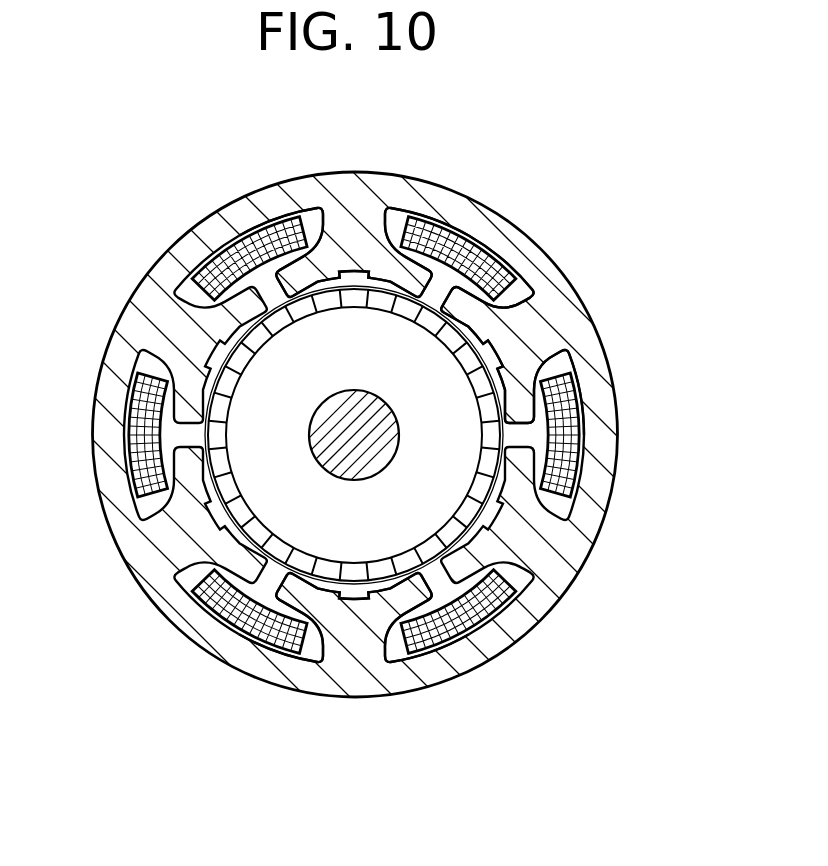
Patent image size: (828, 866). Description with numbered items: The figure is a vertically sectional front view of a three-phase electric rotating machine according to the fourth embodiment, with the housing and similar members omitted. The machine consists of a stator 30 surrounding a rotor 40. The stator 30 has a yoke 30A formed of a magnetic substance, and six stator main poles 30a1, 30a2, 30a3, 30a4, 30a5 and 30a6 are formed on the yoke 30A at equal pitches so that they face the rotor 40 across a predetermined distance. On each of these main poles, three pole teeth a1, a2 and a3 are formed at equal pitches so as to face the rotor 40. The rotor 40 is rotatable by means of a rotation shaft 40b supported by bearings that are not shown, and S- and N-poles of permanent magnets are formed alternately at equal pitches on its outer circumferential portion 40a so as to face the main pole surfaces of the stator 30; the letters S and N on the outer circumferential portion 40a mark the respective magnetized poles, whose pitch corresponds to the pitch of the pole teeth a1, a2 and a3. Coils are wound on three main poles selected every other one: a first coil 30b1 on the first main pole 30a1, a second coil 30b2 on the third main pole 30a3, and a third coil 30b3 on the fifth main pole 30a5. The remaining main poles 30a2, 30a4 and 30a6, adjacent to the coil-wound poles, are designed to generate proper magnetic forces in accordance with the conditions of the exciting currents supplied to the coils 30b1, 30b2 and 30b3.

The stator 30 is at (575, 283).
The yoke 30A is at (537, 272).
The first main pole 30a1 is at (513, 330).
The main pole 30a2 is at (557, 555).
The third main pole 30a3 is at (347, 630).
The main pole 30a4 is at (205, 540).
The fifth main pole 30a5 is at (190, 338).
The main pole 30a6 is at (353, 250).
The first coil 30b1 is at (583, 437).
The second coil 30b2 is at (262, 605).
The third coil 30b3 is at (232, 240).
The pole tooth a1 is at (297, 283).
The pole tooth a2 is at (340, 277).
The pole tooth a3 is at (413, 280).
The rotor 40 is at (445, 295).
The outer circumferential portion 40a is at (374, 297).
The rotation shaft 40b is at (358, 462).